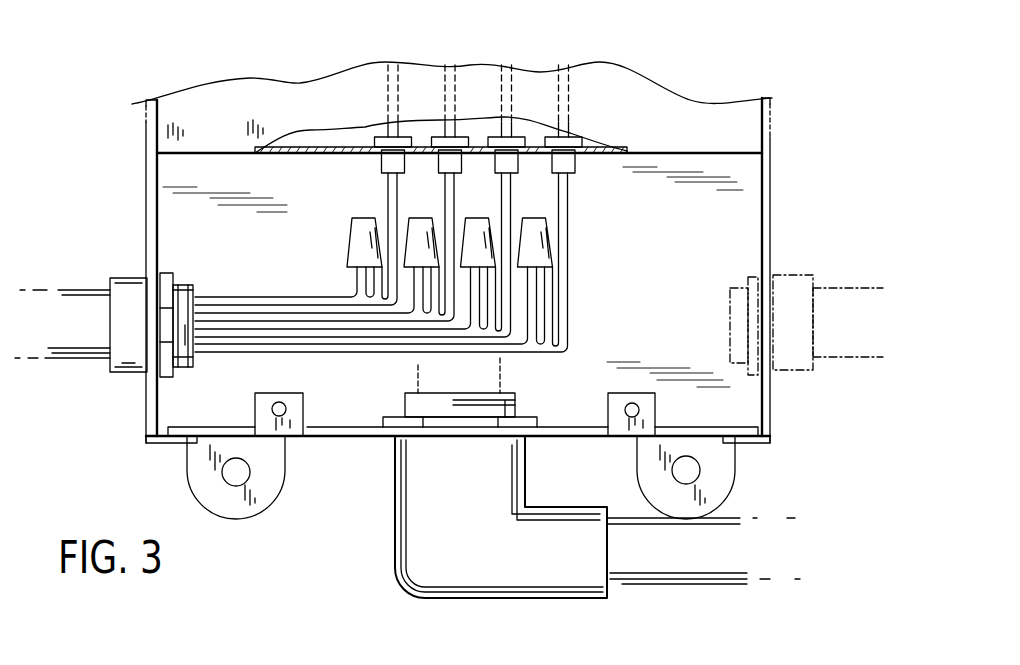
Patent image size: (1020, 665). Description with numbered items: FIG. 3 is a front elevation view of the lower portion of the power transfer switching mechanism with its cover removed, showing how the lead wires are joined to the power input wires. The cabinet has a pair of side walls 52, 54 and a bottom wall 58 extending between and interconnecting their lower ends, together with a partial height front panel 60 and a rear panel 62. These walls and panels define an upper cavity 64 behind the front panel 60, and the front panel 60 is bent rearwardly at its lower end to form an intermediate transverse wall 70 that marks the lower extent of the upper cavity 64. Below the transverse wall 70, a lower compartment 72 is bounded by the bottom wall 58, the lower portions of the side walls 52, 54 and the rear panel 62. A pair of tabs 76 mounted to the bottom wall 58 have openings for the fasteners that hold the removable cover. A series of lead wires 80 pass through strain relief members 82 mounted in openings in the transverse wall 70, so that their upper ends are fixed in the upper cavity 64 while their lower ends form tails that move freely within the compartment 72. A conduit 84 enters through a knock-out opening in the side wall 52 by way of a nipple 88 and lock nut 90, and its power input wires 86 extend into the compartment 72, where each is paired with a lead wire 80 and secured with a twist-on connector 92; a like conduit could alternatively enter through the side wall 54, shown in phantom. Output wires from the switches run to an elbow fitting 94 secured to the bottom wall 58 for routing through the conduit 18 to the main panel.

The conduit 18 is at (667, 585).
The side wall 52 is at (146, 180).
The side wall 54 is at (774, 212).
The bottom wall 58 is at (333, 438).
The front panel 60 is at (708, 110).
The rear panel 62 is at (690, 299).
The upper cavity 64 is at (588, 138).
The intermediate transverse wall 70 is at (315, 160).
The lower compartment 72 is at (733, 260).
The tabs 76 is at (304, 413).
The lead wires 80 is at (398, 194).
The strain relief member 82 is at (380, 167).
The conduit 84 is at (62, 362).
The power input wires 86 is at (308, 340).
The nipple 88 is at (128, 276).
The lock nut 90 is at (167, 272).
The twist-on connectors 92 is at (350, 240).
The elbow fitting 94 is at (397, 517).